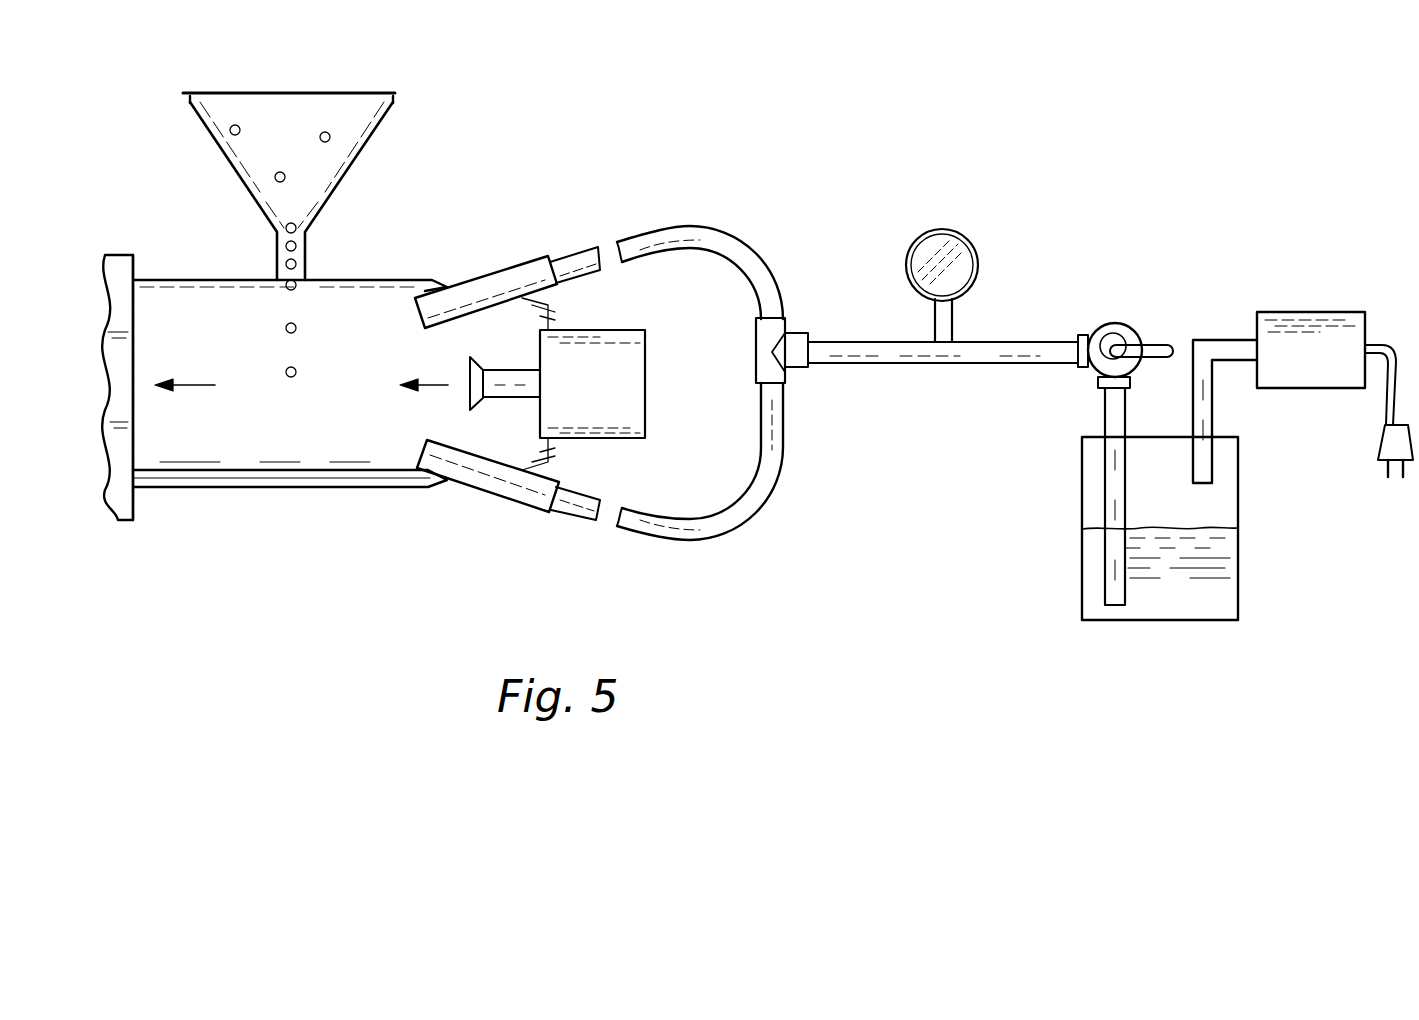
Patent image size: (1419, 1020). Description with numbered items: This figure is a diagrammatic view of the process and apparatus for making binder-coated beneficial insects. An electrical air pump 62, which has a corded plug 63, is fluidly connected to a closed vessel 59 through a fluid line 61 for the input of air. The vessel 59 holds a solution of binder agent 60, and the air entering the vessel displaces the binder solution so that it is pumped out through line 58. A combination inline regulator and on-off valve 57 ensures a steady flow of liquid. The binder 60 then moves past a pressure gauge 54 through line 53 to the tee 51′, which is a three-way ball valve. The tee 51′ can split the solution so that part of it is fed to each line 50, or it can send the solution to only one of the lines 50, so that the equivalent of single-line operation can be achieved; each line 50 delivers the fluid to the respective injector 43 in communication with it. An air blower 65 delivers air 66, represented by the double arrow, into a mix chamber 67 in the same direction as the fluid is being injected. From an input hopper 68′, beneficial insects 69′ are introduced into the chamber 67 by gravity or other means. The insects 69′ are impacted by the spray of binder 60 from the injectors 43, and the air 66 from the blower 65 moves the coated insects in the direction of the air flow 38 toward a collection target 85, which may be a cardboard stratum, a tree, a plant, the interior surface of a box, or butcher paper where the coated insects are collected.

The collection target 85 is at (123, 258).
The mix chamber 67 is at (298, 490).
The input hopper 68′ is at (358, 150).
The beneficial insects 69′ is at (327, 130).
The air flow 38 is at (190, 385).
The air 66 is at (433, 385).
The air blower 65 is at (603, 401).
The injector 43 is at (510, 278).
The line 50 is at (735, 238).
The tee 51′ is at (765, 358).
The line 53 is at (865, 355).
The pressure gauge 54 is at (968, 245).
The combination inline regulator and on-off valve 57 is at (1120, 337).
The line 58 is at (1108, 414).
The vessel 59 is at (1215, 505).
The binder agent solution 60 is at (1196, 611).
The fluid line 61 is at (1205, 414).
The electrical air pump 62 is at (1320, 369).
The corded plug 63 is at (1388, 447).